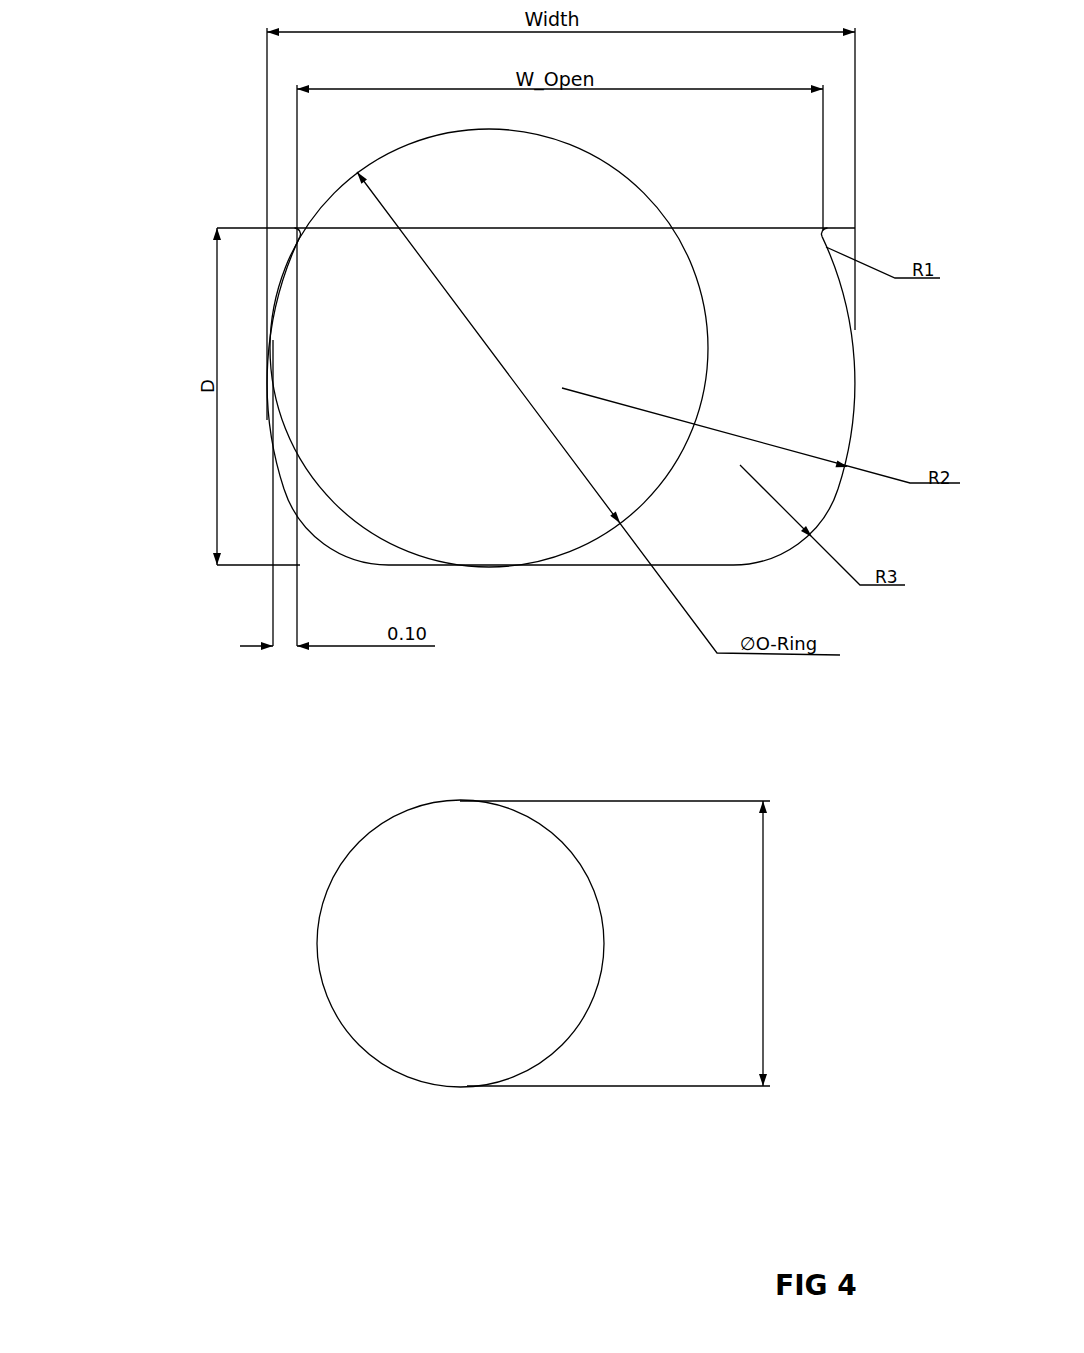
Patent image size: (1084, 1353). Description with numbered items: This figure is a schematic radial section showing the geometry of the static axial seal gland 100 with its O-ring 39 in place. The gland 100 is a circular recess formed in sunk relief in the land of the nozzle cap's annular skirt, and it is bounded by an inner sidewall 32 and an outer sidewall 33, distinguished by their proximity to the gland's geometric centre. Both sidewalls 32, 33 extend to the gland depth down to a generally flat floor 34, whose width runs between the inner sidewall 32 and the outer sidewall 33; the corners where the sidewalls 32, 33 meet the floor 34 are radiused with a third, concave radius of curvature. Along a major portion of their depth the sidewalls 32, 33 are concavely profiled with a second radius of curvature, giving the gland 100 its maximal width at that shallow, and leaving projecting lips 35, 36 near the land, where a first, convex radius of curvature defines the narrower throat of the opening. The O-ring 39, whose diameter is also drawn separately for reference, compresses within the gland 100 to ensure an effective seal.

The static axial seal gland 100 is at (158, 98).
The inner sidewall 32 is at (266, 422).
The outer sidewall 33 is at (853, 428).
The floor 34 is at (586, 568).
The projecting lip 35 is at (296, 241).
The projecting lip 36 is at (815, 233).
The O-ring 39 is at (466, 393).